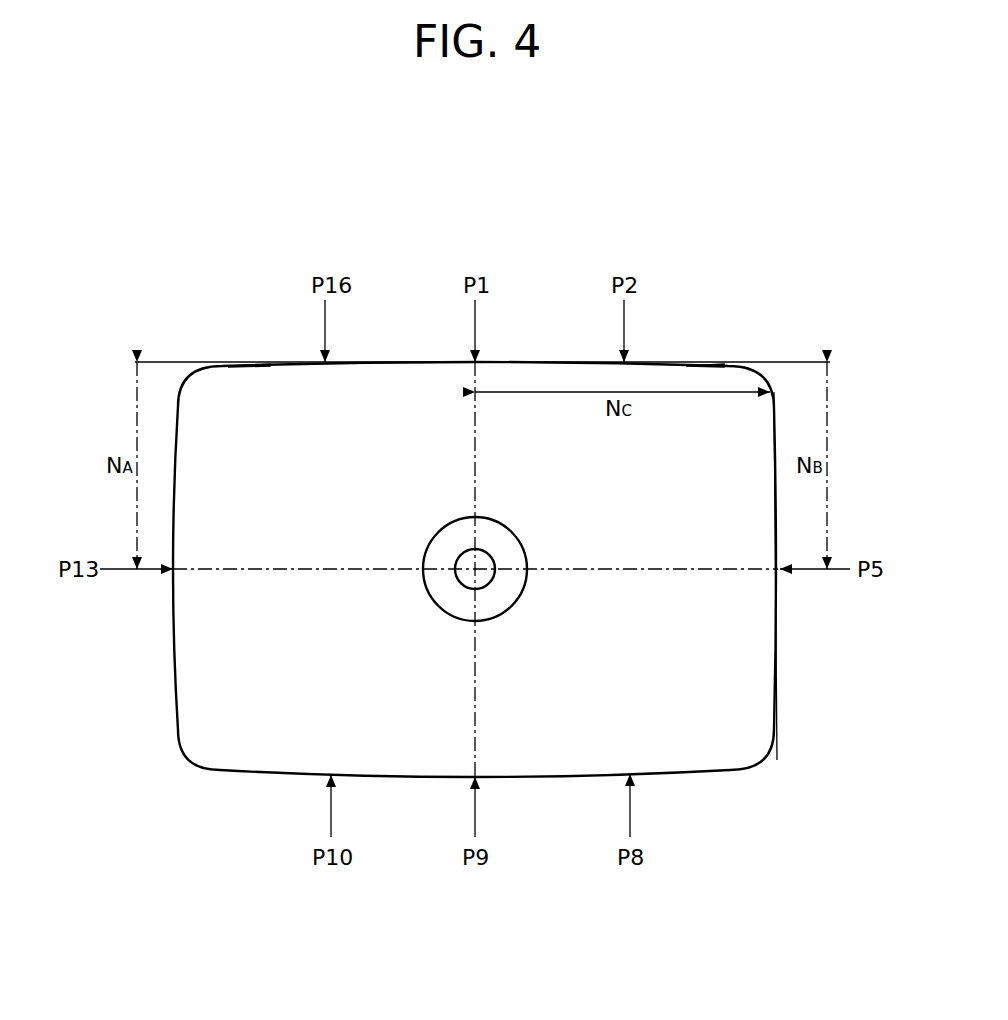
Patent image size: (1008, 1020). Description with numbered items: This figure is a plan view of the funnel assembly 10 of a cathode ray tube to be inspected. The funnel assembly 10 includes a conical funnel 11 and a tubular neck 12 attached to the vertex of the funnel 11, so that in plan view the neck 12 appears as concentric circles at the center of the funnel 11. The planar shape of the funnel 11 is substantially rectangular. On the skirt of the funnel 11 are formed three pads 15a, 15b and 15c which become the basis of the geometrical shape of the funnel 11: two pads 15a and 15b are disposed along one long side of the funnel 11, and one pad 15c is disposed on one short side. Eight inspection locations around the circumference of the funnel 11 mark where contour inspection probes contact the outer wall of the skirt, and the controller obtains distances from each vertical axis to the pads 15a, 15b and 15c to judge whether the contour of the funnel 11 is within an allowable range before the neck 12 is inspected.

The funnel assembly 10 is at (840, 298).
The funnel 11 is at (720, 702).
The neck 12 is at (522, 538).
The pad 15a is at (240, 362).
The pad 15b is at (715, 362).
The pad 15c is at (783, 428).